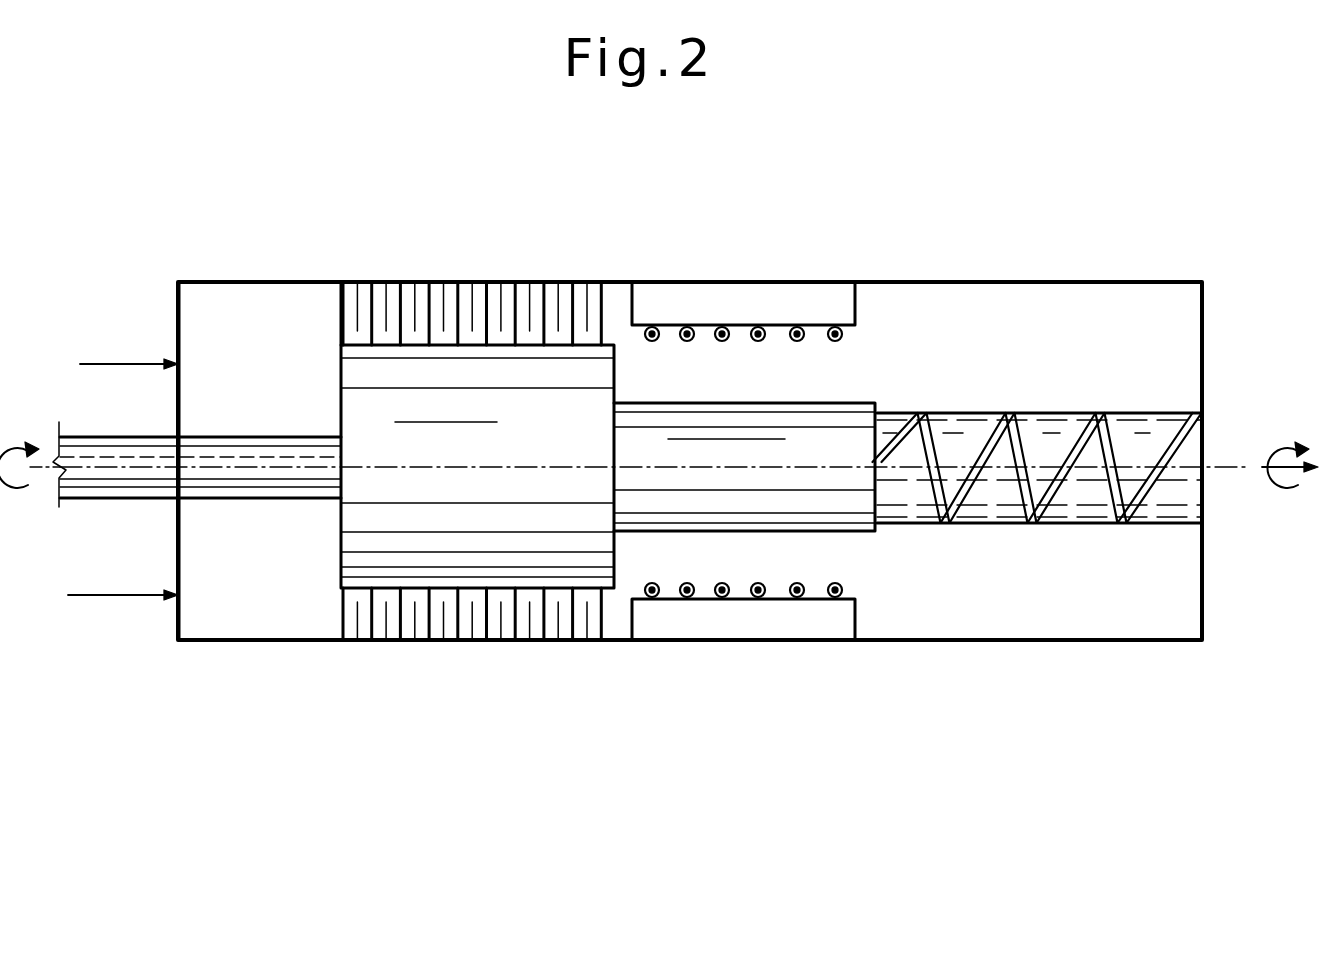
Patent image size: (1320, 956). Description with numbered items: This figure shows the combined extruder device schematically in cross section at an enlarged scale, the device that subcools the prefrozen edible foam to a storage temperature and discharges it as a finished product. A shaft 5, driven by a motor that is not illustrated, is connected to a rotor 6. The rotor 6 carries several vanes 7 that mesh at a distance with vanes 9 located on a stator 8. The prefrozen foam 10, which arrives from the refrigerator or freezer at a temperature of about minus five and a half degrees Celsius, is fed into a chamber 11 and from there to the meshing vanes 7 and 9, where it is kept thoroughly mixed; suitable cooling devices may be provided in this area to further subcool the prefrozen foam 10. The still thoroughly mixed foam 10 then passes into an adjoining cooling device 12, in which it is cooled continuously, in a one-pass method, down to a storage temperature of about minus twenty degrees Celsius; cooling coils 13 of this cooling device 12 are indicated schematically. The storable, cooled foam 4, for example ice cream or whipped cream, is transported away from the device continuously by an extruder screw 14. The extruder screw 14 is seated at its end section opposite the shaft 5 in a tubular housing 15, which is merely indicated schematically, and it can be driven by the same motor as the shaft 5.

The storable product 4 is at (1262, 468).
The shaft 5 is at (106, 480).
The rotor 6 is at (381, 563).
The vanes 7 is at (344, 300).
The stator 8 is at (406, 282).
The vanes 9 is at (478, 310).
The prefrozen foam 10 is at (105, 628).
The chamber 11 is at (232, 597).
The cooling device 12 is at (739, 365).
The cooling coils 13 is at (836, 341).
The extruder screw 14 is at (957, 503).
The tubular housing 15 is at (1075, 282).